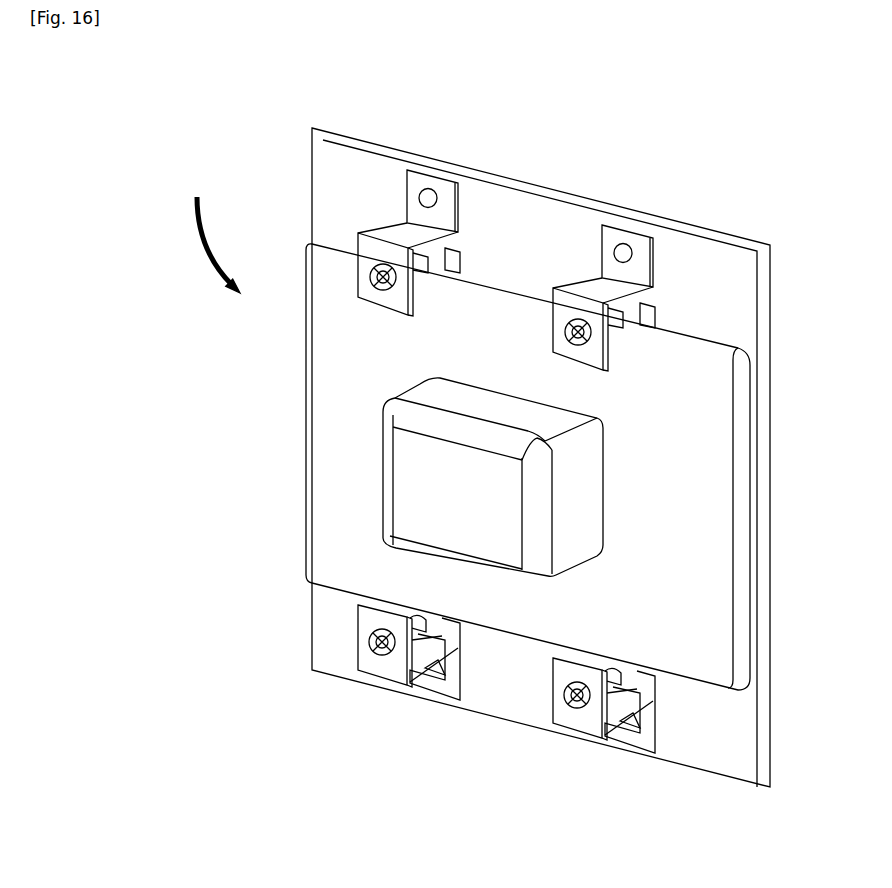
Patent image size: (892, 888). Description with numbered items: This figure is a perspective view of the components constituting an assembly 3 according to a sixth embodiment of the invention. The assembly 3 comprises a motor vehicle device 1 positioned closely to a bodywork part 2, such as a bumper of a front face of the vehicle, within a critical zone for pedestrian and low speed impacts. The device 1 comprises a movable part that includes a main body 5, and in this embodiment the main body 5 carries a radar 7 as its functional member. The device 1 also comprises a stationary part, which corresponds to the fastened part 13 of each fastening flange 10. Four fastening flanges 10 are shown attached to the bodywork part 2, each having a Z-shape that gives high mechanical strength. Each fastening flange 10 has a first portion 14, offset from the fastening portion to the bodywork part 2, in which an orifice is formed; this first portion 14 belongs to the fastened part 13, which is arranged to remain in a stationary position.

The motor vehicle device 1 is at (206, 223).
The bodywork part 2 is at (323, 155).
The assembly 3 is at (210, 66).
The main body 5 is at (338, 388).
The radar 7 is at (418, 510).
The fastening flange 10 is at (463, 218).
The fastened part 13 is at (372, 228).
The first portion 14 is at (382, 248).